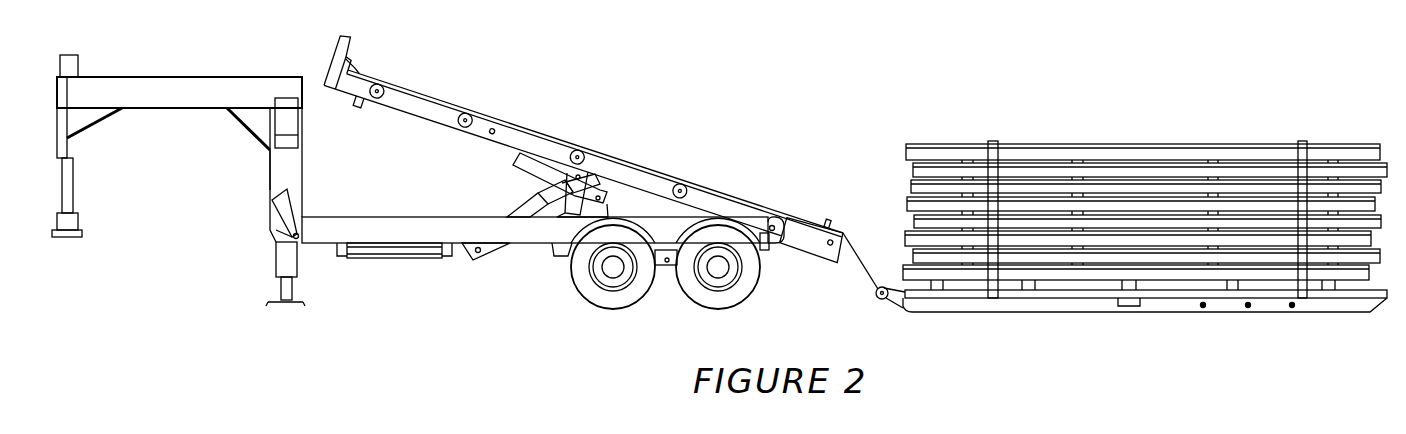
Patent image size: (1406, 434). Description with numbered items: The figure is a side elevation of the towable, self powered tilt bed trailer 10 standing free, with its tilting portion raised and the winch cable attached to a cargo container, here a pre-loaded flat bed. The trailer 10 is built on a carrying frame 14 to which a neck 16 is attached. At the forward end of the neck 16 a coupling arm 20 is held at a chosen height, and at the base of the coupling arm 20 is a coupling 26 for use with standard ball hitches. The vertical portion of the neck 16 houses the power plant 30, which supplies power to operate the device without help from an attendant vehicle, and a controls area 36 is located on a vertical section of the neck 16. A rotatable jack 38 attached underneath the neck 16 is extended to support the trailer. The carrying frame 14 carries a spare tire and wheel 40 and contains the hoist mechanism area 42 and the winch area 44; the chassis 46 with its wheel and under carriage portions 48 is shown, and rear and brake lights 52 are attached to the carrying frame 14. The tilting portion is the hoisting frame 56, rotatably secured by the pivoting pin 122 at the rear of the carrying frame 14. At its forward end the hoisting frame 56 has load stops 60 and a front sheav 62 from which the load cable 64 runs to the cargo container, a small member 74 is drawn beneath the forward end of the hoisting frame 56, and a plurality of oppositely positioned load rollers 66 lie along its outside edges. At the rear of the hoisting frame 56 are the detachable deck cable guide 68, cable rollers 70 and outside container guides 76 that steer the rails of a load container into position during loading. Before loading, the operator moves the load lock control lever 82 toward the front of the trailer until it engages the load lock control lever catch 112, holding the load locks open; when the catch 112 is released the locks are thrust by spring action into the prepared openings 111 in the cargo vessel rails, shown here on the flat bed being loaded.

The tilt bed trailer 10 is at (535, 152).
The carrying frame 14 is at (527, 236).
The neck 16 is at (148, 78).
The coupling arm 20 is at (74, 178).
The coupling 26 is at (76, 224).
The power plant 30 is at (268, 160).
The controls area 36 is at (290, 118).
The rotatable jack 38 is at (286, 256).
The spare tire and wheel 40 is at (410, 256).
The hoist mechanism area 42 is at (552, 190).
The winch area 44 is at (666, 216).
The chassis 46 is at (566, 247).
The wheel and under carriage portions 48 is at (742, 296).
The rear and brake lights 52 is at (773, 250).
The hoisting frame 56 is at (432, 112).
The load stops 60 is at (336, 66).
The front sheav 62 is at (350, 72).
The load cable 64 is at (436, 97).
The load rollers 66 is at (682, 185).
The deck cable guide 68 is at (828, 220).
The cable rollers 70 is at (850, 258).
The tab 74 is at (365, 108).
The outside container guides 76 is at (822, 252).
The load lock control lever 82 is at (278, 232).
The prepared openings 111 is at (1203, 308).
The load lock control lever catch 112 is at (284, 192).
The pivoting pin 122 is at (776, 214).